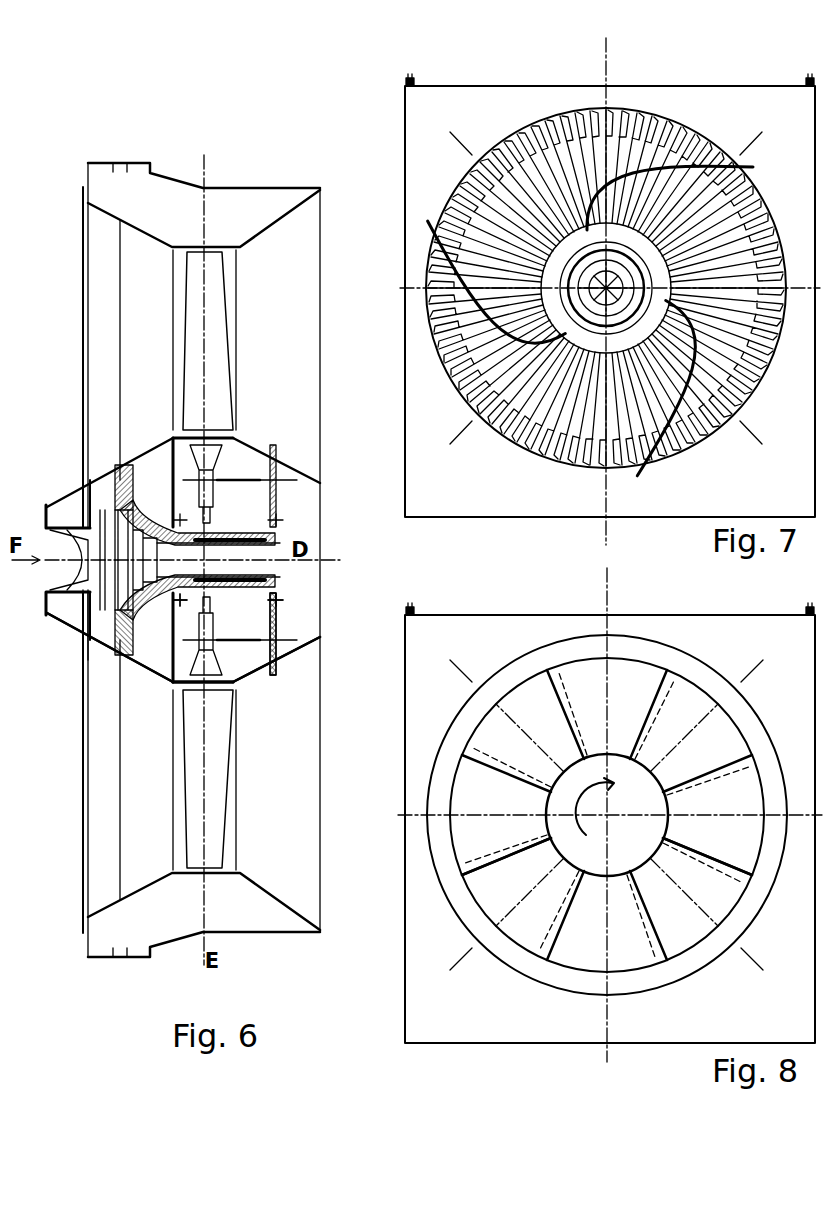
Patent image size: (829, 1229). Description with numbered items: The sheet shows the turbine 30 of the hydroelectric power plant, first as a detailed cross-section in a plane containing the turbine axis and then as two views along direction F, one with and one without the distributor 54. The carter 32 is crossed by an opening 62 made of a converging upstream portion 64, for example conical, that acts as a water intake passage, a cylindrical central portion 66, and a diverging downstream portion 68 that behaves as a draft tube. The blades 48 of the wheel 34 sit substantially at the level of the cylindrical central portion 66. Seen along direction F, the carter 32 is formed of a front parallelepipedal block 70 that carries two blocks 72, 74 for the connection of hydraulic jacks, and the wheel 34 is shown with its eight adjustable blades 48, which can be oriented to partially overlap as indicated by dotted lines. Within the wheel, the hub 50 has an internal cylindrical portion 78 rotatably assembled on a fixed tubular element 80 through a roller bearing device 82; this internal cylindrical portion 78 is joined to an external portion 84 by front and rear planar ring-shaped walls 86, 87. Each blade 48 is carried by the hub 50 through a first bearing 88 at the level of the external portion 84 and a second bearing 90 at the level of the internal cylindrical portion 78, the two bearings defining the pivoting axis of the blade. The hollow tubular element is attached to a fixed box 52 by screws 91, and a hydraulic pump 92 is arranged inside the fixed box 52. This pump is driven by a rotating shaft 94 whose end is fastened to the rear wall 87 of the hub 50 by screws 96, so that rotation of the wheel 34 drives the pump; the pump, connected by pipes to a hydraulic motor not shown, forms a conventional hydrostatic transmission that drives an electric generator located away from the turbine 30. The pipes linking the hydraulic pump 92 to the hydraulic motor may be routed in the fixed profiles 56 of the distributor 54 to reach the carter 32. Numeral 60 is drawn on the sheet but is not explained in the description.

In FIG. 6, the turbine 30 is at (281, 942).
In FIG. 7, the turbine 30 is at (663, 58).
In FIG. 8, the turbine 30 is at (477, 1069).
In FIG. 6, the carter 32 is at (243, 230).
In FIG. 7, the carter 32 is at (688, 87).
In FIG. 8, the carter 32 is at (521, 1054).
In FIG. 6, the wheel 34 is at (222, 304).
In FIG. 8, the wheel 34 is at (493, 817).
In FIG. 6, the blades 48 is at (210, 270).
In FIG. 8, the blades 48 is at (585, 708).
In FIG. 6, the hub 50 is at (277, 448).
In FIG. 8, the hub 50 is at (617, 850).
In FIG. 6, the fixed box 52 is at (118, 468).
In FIG. 7, the distributor 54 is at (538, 128).
In FIG. 6, the fixed profiles 56 is at (110, 875).
In FIG. 7, the fixed profiles 56 is at (565, 110).
In FIG. 6, the struts 60 is at (84, 672).
In FIG. 7, the struts 60 is at (703, 443).
In FIG. 6, the opening 62 is at (275, 217).
In FIG. 8, the opening 62 is at (451, 870).
In FIG. 6, the converging upstream portion 64 is at (118, 215).
In FIG. 7, the converging upstream portion 64 is at (617, 115).
In FIG. 6, the cylindrical central portion 66 is at (188, 245).
In FIG. 6, the diverging downstream portion 68 is at (307, 190).
In FIG. 8, the diverging downstream portion 68 is at (462, 897).
In FIG. 7, the front parallelepipedal block 70 is at (735, 125).
In FIG. 7, the block 72 is at (410, 77).
In FIG. 8, the block 72 is at (410, 606).
In FIG. 7, the block 74 is at (810, 77).
In FIG. 8, the block 74 is at (810, 606).
In FIG. 6, the internal cylindrical portion 78 is at (265, 642).
In FIG. 6, the fixed tubular element 80 is at (218, 526).
In FIG. 6, the roller bearing device 82 is at (260, 553).
In FIG. 6, the external portion 84 is at (246, 679).
In FIG. 6, the front planar ring-shaped wall 86 is at (123, 640).
In FIG. 6, the rear planar ring-shaped wall 87 is at (290, 480).
In FIG. 6, the first bearing 88 is at (250, 700).
In FIG. 6, the second bearing 90 is at (278, 640).
In FIG. 6, the screws 91 is at (85, 645).
In FIG. 6, the hydraulic pump 92 is at (52, 522).
In FIG. 6, the rotating shaft 94 is at (243, 573).
In FIG. 6, the screws 96 is at (265, 600).